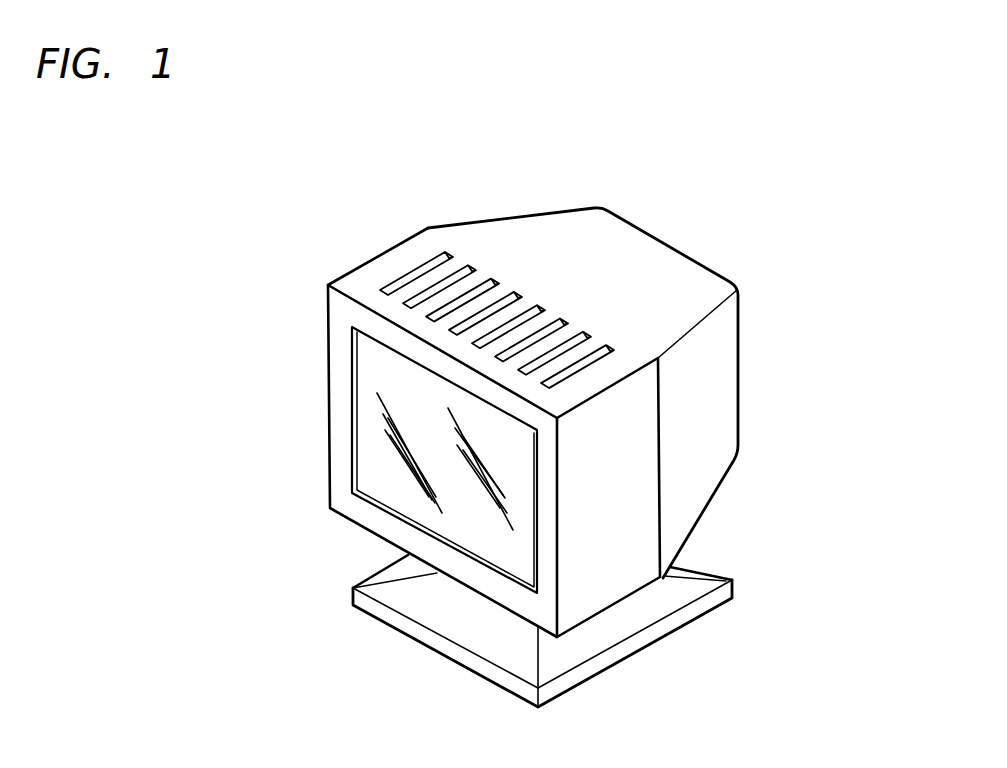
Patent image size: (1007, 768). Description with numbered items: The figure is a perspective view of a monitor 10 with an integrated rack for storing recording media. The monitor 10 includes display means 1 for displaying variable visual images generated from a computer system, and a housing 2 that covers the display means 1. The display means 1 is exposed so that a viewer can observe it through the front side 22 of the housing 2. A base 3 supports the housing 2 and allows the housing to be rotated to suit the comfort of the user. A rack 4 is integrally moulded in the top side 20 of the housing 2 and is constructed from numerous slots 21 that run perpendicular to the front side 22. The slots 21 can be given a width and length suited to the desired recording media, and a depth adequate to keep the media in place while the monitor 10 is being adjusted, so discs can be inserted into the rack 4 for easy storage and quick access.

The monitor 10 is at (690, 105).
The display means 1 is at (363, 435).
The housing 2 is at (738, 417).
The base 3 is at (702, 582).
The rack 4 is at (392, 282).
The top side 20 is at (417, 242).
The slots 21 is at (597, 352).
The front side 22 is at (337, 316).